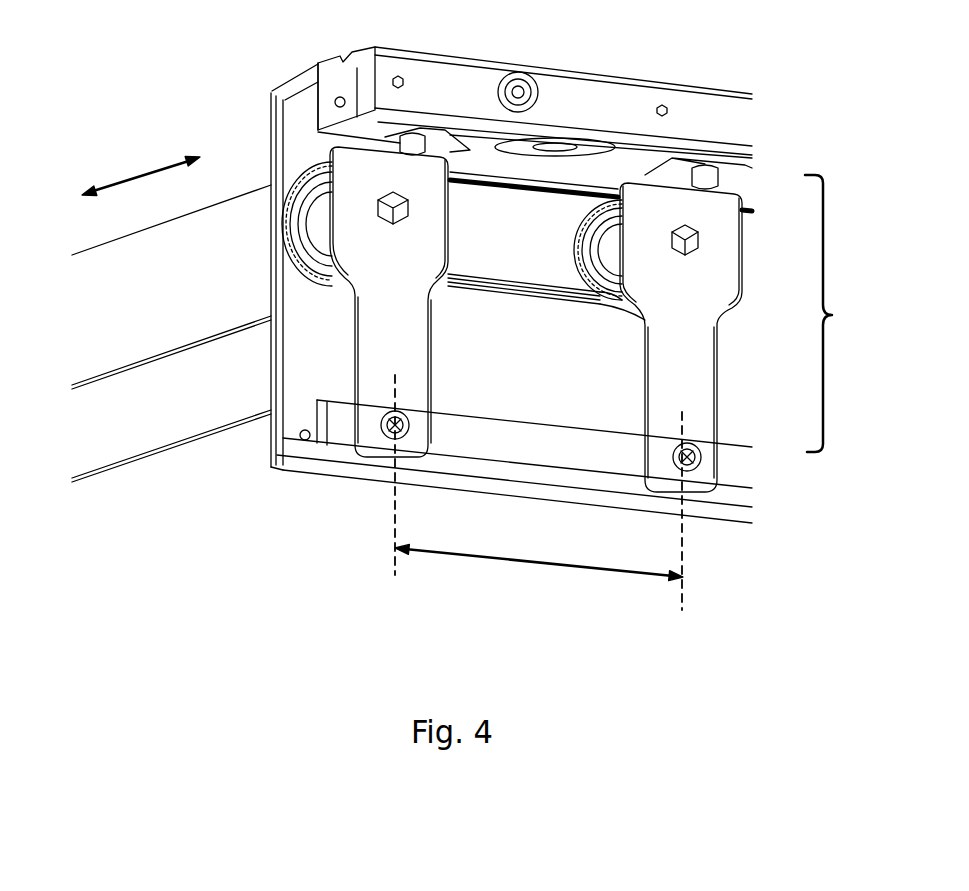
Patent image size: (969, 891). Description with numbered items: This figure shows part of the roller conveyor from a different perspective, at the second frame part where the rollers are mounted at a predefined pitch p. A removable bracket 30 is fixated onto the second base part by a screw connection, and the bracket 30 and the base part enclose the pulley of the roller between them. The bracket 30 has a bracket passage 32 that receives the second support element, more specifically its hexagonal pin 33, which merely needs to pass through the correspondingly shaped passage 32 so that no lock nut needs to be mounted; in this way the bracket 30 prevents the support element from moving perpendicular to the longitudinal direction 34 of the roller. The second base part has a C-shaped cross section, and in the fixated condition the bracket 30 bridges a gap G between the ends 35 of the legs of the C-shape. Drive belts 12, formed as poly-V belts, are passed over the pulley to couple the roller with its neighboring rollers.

The drive belt 12 is at (528, 295).
The removable bracket 30 is at (378, 327).
The bracket passage 32 is at (355, 228).
The pin 33 is at (397, 203).
The longitudinal direction 34 is at (138, 175).
The ends of legs 35 is at (320, 126).
The gap G is at (842, 313).
The pitch p is at (527, 562).